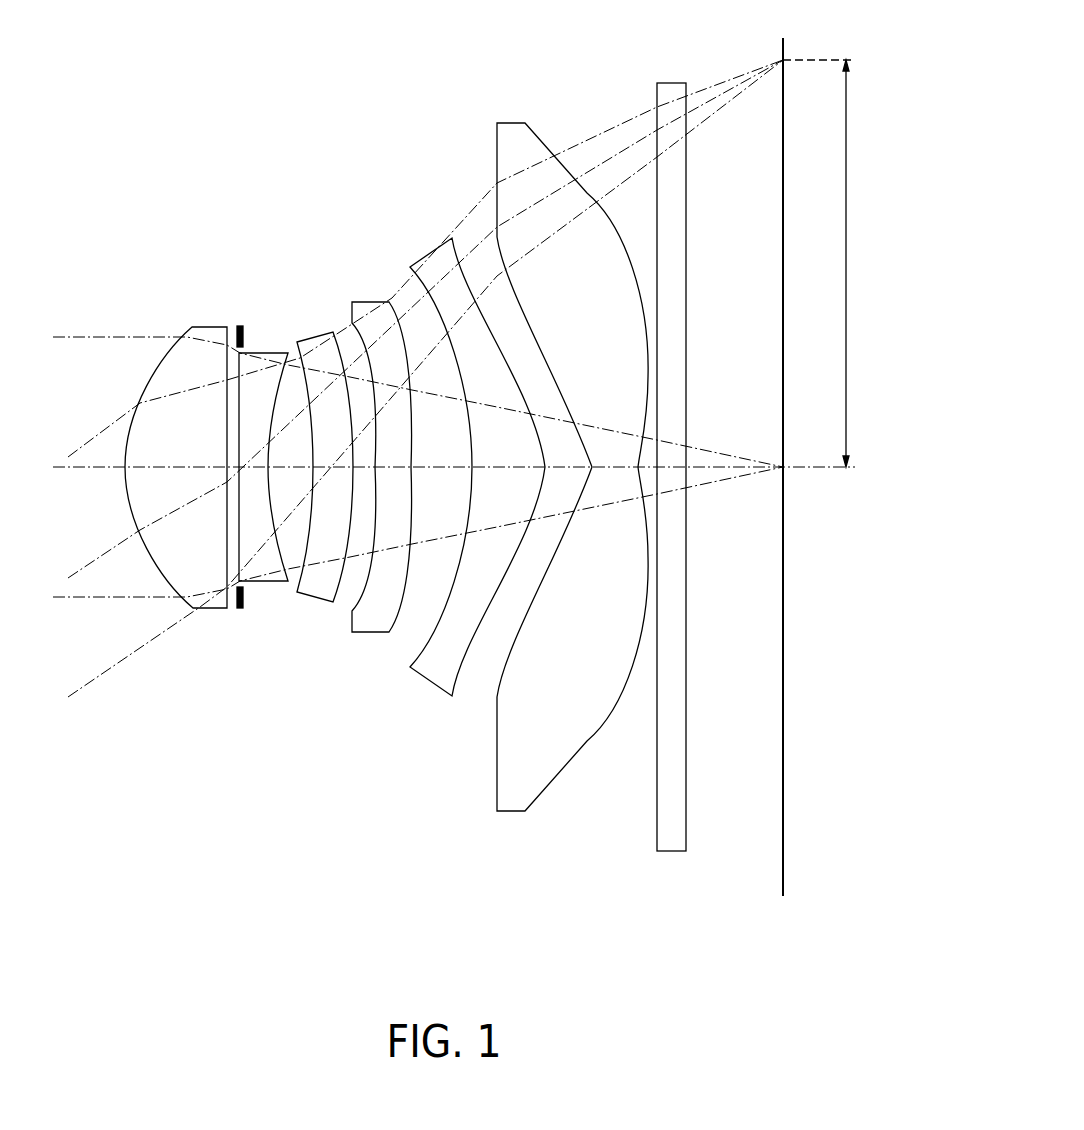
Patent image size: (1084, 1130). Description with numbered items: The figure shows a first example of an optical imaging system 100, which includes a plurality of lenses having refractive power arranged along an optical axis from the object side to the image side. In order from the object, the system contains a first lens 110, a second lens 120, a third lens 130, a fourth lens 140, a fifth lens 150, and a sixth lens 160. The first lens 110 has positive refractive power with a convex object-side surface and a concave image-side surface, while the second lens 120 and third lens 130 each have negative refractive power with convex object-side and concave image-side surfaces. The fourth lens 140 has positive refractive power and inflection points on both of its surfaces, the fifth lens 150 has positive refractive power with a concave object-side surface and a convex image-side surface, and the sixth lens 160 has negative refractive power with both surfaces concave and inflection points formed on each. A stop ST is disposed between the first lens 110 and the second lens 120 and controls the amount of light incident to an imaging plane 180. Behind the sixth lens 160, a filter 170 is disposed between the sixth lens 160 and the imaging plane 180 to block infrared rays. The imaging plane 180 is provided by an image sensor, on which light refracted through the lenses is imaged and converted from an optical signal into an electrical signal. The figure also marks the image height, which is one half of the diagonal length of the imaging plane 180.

The optical imaging system 100 is at (382, 97).
The stop ST is at (242, 337).
The first lens 110 is at (212, 600).
The second lens 120 is at (258, 585).
The third lens 130 is at (317, 592).
The fourth lens 140 is at (372, 630).
The fifth lens 150 is at (430, 675).
The sixth lens 160 is at (513, 808).
The filter 170 is at (672, 850).
The imaging plane 180 is at (782, 870).